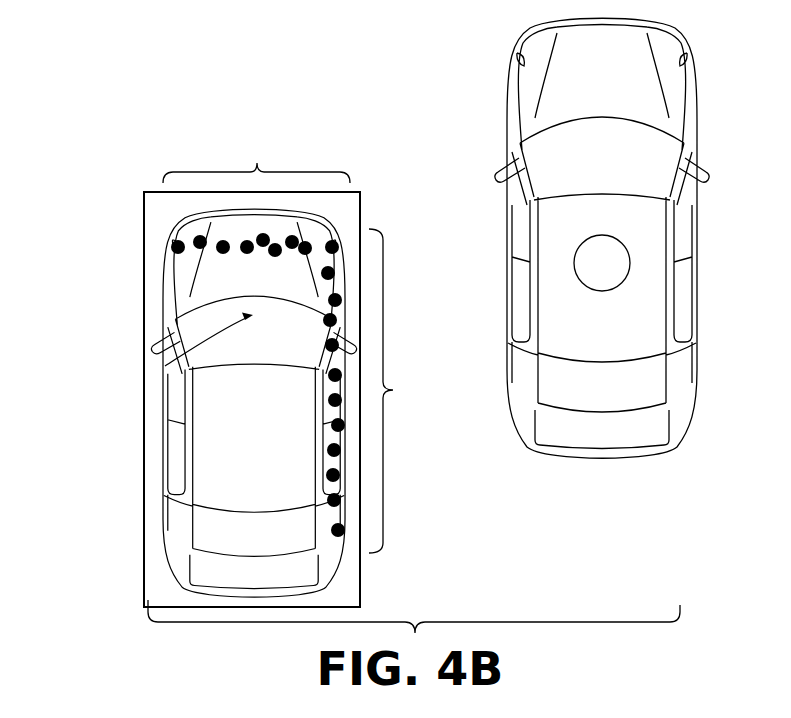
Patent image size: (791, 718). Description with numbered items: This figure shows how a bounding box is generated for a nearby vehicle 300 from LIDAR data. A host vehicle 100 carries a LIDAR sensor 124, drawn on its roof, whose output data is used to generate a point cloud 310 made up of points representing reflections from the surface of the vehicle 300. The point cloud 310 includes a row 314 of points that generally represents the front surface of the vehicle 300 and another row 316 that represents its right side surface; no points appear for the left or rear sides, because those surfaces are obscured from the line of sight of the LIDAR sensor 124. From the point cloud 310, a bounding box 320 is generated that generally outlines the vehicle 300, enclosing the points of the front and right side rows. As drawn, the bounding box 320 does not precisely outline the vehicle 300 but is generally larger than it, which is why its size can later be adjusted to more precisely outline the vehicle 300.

The vehicle 100 is at (697, 103).
The LIDAR sensor 124 is at (608, 262).
The vehicle 300 is at (167, 465).
The point cloud 310 is at (165, 366).
The row of points 314 is at (256, 160).
The row of points 316 is at (406, 391).
The bounding box 320 is at (145, 545).